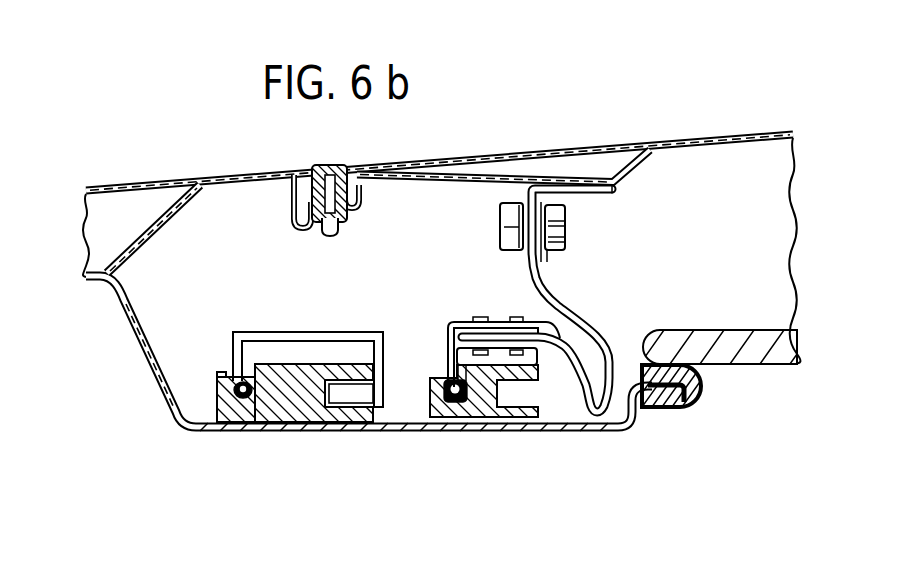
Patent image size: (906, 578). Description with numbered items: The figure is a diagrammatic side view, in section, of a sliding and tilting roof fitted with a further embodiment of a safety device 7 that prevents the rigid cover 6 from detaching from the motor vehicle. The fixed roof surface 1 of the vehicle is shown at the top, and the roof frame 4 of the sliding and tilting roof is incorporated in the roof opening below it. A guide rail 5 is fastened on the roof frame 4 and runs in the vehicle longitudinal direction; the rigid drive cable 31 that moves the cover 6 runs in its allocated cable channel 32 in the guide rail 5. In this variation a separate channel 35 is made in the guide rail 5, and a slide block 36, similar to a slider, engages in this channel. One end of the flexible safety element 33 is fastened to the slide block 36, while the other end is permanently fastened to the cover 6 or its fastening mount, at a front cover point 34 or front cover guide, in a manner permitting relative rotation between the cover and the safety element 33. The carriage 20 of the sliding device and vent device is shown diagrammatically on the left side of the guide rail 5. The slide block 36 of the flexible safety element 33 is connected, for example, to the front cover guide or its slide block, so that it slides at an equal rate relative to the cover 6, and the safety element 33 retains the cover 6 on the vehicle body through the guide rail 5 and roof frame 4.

The fixed roof surface 1 is at (177, 185).
The roof frame 4 is at (178, 420).
The guide rail 5 is at (303, 400).
The cover 6 is at (714, 133).
The safety device 7 is at (618, 323).
The carriage 20 is at (297, 332).
The rigid drive cable 31 is at (231, 426).
The cable channel 32 is at (243, 401).
The flexible safety element 33 is at (553, 292).
The front cover point 34 is at (541, 216).
The separate channel 35 is at (472, 402).
The slide block 36 is at (455, 324).